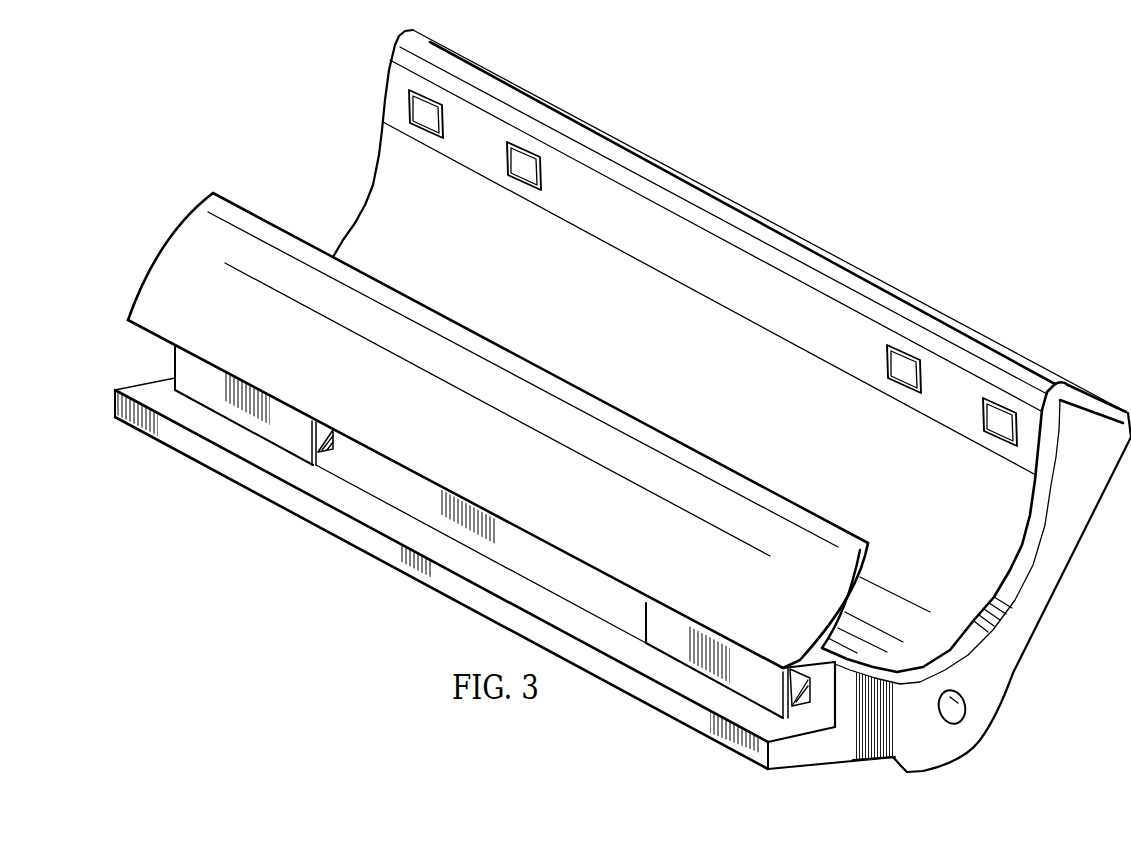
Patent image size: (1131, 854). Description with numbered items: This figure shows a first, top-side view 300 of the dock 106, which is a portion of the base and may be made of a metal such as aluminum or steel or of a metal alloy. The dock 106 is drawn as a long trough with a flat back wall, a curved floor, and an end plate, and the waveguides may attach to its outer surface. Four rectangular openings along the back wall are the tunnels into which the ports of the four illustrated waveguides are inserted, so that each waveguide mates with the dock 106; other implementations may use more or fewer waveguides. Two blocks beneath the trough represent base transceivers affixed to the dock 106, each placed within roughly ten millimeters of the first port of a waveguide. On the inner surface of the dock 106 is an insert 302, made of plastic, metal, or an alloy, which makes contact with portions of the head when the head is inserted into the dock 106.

The tray assembly 300 is at (821, 157).
The insert 302 is at (377, 200).
The dock 106 is at (1005, 687).